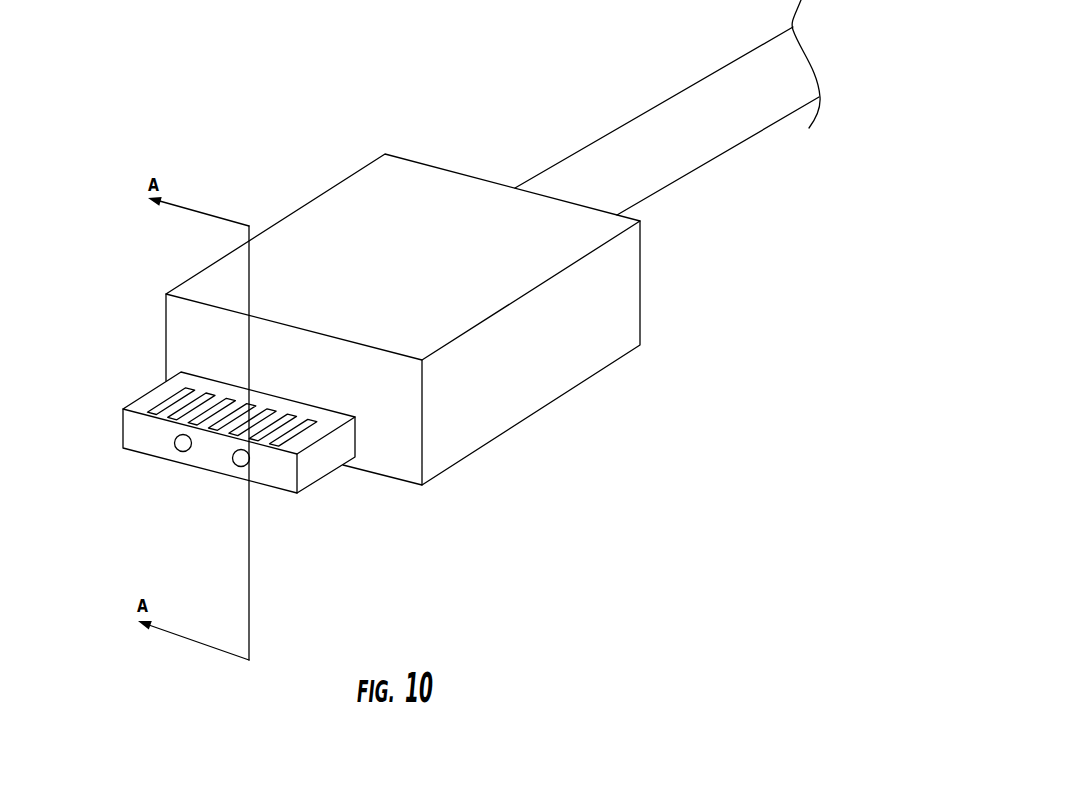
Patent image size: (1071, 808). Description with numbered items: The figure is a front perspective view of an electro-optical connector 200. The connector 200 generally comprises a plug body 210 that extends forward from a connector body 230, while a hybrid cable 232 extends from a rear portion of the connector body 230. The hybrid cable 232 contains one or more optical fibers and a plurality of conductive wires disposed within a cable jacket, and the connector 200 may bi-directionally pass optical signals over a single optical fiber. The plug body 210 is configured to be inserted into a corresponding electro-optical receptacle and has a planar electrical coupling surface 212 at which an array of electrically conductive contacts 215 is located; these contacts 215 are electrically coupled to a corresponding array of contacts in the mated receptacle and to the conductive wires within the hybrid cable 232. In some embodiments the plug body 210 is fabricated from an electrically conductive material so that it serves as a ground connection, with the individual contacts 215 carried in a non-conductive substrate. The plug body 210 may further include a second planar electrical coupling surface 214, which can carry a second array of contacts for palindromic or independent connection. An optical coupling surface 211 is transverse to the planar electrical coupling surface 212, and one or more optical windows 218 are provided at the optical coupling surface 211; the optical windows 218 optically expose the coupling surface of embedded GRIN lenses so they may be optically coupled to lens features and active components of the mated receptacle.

The electro-optical connector 200 is at (256, 78).
The plug body 210 is at (108, 404).
The optical coupling surface 211 is at (158, 450).
The planar electrical coupling surface 212 is at (325, 430).
The second planar electrical coupling surface 214 is at (303, 491).
The array of electrically conductive contacts 215 is at (337, 404).
The optical windows 218 is at (238, 467).
The connector body 230 is at (270, 228).
The hybrid cable 232 is at (628, 118).